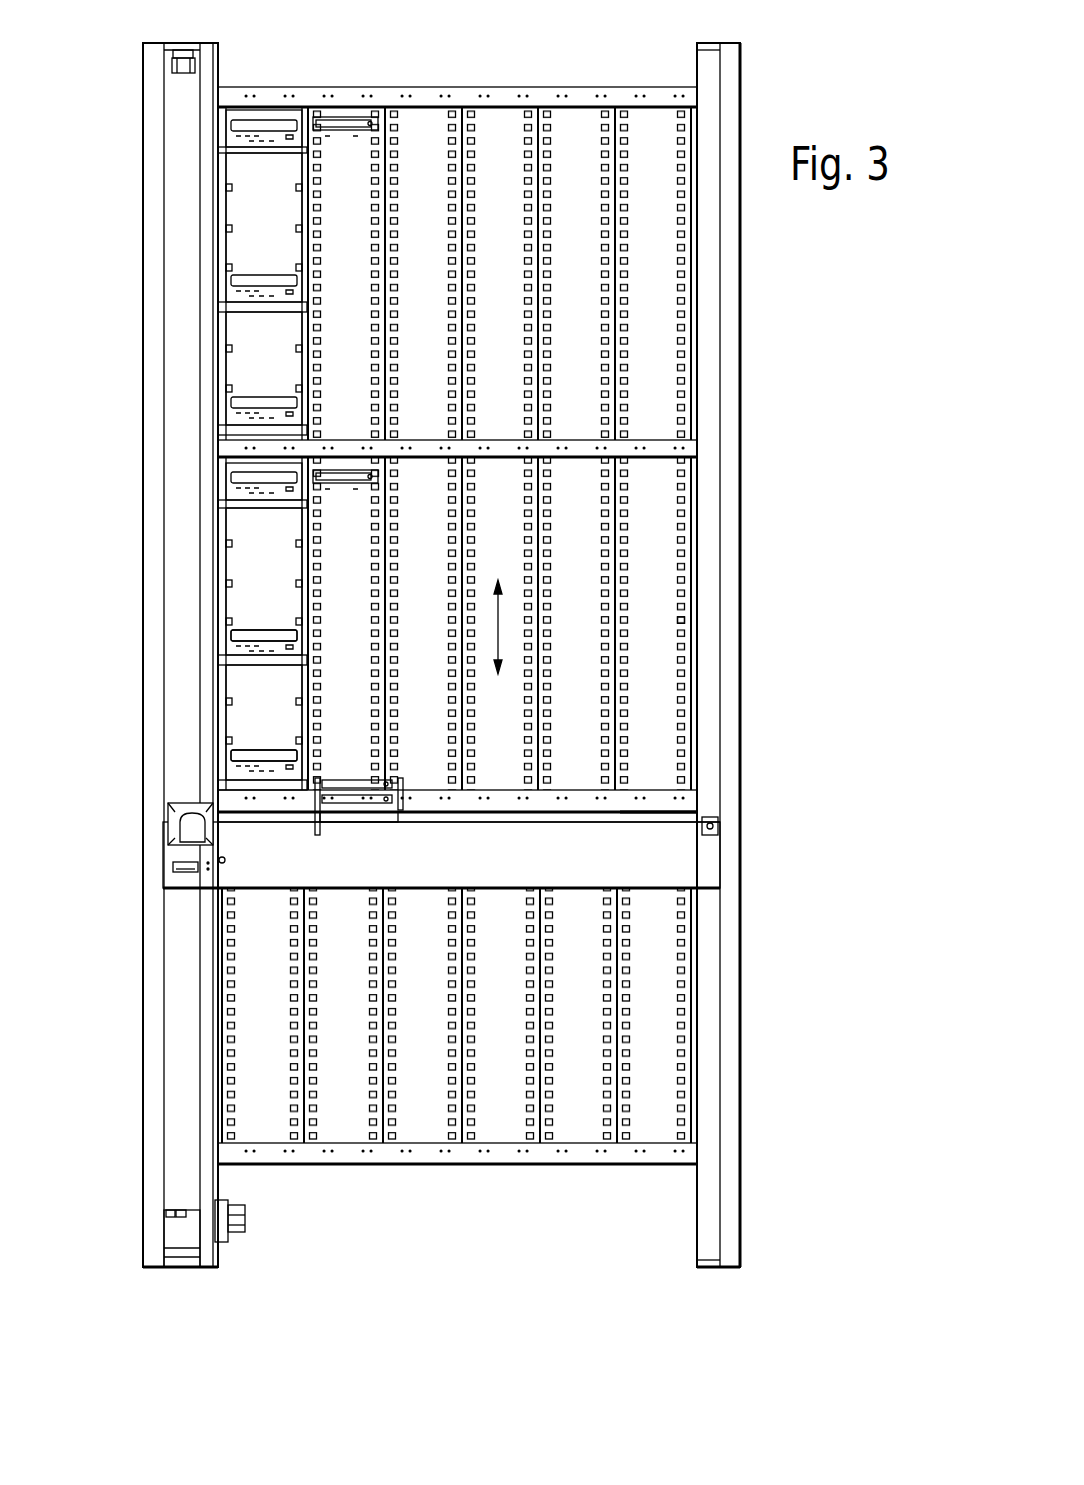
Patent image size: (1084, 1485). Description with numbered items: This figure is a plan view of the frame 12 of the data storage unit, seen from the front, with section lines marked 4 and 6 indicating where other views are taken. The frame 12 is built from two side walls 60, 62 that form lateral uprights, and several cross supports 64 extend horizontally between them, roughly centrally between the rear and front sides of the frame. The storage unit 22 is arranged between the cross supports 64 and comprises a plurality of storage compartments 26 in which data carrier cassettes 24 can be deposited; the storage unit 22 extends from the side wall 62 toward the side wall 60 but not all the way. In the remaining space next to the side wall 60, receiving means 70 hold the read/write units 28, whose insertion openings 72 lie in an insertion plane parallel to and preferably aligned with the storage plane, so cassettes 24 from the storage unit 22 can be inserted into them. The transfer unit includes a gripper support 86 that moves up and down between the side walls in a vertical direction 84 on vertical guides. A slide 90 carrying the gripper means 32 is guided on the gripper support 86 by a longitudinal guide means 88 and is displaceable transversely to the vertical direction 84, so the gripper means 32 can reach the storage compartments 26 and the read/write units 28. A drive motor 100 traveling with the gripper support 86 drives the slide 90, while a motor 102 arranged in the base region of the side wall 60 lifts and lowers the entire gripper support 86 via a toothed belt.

The frame 12 is at (754, 311).
The storage unit 22 is at (668, 559).
The data carrier cassettes 24 is at (350, 130).
The storage compartments 26 is at (688, 617).
The read/write units 28 is at (226, 495).
The gripper means 32 is at (405, 782).
The side wall 60 is at (140, 1098).
The side wall 62 is at (750, 1107).
The cross supports 64 is at (690, 101).
The receiving means 70 is at (229, 560).
The insertion openings 72 is at (255, 630).
The vertical direction 84 is at (500, 627).
The gripper support 86 is at (718, 868).
The longitudinal guide means 88 is at (650, 811).
The slide 90 is at (368, 813).
The drive motor 100 is at (177, 828).
The motor 102 is at (224, 1238).
The section line IV 4 is at (80, 702).
The section line VI 6 is at (565, 27).